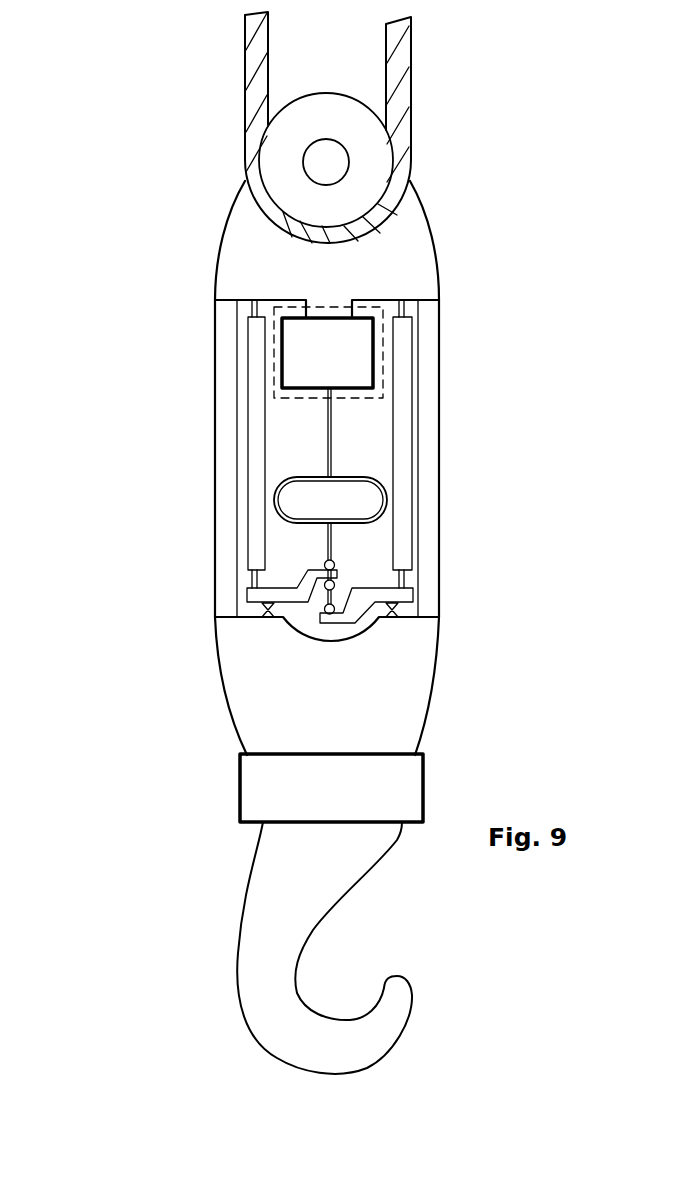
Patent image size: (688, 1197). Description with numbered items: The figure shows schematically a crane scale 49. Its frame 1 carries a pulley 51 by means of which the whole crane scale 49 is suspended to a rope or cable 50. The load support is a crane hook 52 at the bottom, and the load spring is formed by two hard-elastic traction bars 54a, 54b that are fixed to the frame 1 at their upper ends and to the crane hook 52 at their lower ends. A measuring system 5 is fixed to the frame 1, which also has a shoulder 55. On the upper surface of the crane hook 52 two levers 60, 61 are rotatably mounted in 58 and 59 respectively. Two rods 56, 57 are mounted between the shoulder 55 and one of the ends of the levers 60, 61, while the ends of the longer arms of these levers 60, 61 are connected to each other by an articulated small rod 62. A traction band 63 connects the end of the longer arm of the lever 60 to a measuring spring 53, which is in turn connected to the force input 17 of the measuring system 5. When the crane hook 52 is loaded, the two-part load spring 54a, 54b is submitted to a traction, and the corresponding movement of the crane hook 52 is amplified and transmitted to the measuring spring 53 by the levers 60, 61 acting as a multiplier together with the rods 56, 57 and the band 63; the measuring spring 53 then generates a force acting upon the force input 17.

The frame 1 is at (378, 270).
The measuring system 5 is at (349, 351).
The force input 17 is at (357, 382).
The crane scale 49 is at (128, 438).
The rope or cable 50 is at (402, 95).
The pulley 51 is at (377, 155).
The crane hook 52 is at (282, 778).
The measuring spring 53 is at (277, 493).
The traction bar 54a is at (226, 442).
The traction bar 54b is at (430, 485).
The shoulder 55 is at (237, 301).
The rod 56 is at (255, 405).
The rod 57 is at (402, 408).
The pivot of lever 60 58 is at (260, 612).
The pivot of lever 61 59 is at (400, 612).
The lever 60 is at (270, 593).
The lever 61 is at (382, 592).
The articulated small rod 62 is at (325, 602).
The traction band 63 is at (330, 549).